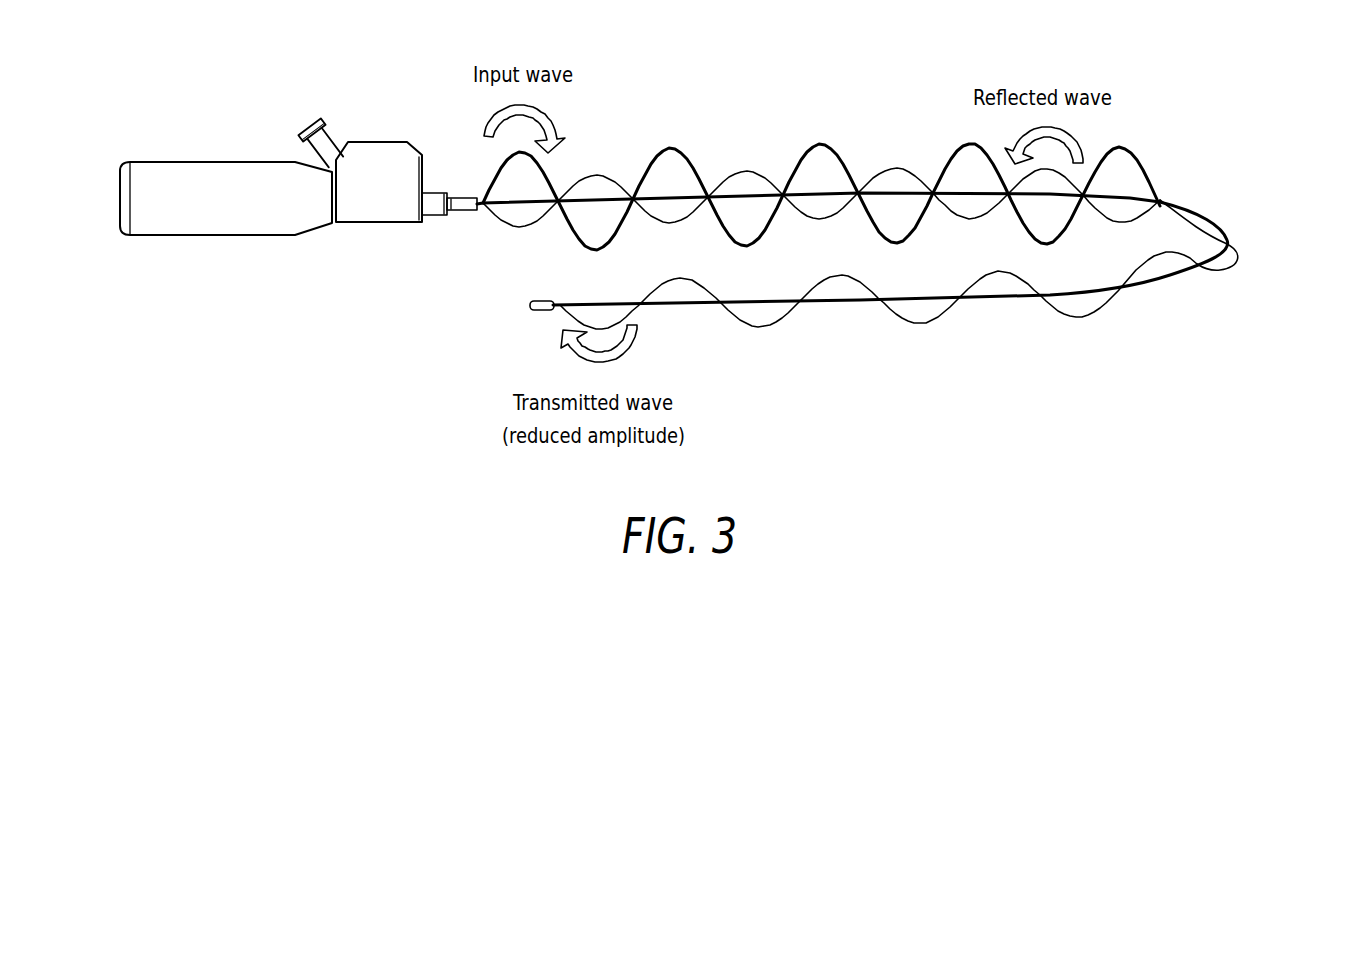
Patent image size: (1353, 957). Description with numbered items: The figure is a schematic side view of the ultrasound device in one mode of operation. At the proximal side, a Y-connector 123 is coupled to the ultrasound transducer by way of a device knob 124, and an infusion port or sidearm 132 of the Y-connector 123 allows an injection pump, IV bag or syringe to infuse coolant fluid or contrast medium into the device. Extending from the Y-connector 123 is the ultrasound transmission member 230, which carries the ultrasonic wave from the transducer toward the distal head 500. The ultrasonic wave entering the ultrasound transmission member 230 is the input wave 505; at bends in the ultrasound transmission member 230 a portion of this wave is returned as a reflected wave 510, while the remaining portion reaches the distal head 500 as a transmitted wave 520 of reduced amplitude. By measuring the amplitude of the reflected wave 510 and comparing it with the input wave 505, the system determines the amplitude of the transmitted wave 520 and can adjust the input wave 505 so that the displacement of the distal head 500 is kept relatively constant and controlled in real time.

The device knob 124 is at (213, 140).
The Y-connector 123 is at (355, 253).
The infusion port or sidearm 132 is at (323, 140).
The ultrasound transmission member 230 is at (1203, 212).
The distal head 500 is at (526, 321).
The input wave 505 is at (675, 142).
The reflected wave 510 is at (1130, 136).
The transmitted wave 520 is at (765, 345).